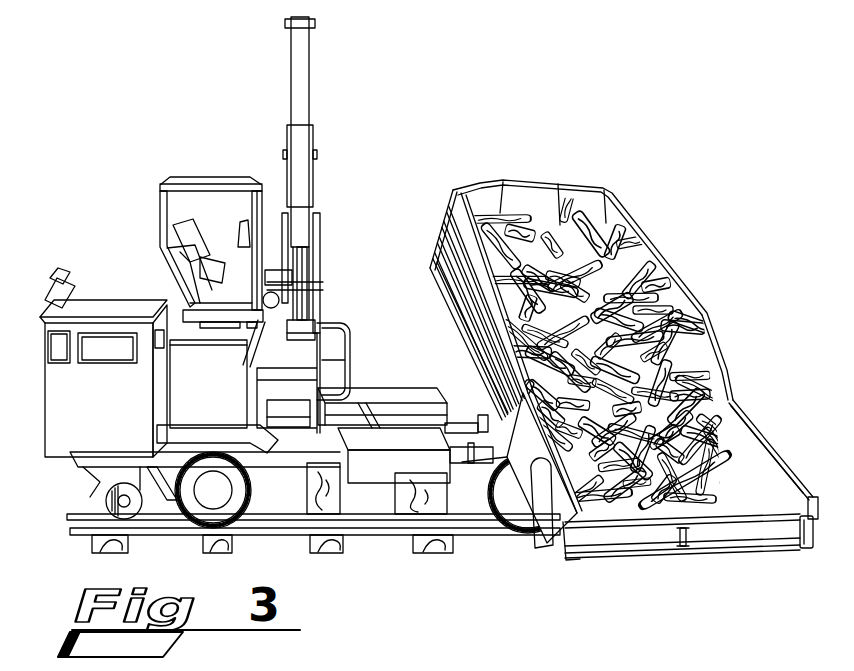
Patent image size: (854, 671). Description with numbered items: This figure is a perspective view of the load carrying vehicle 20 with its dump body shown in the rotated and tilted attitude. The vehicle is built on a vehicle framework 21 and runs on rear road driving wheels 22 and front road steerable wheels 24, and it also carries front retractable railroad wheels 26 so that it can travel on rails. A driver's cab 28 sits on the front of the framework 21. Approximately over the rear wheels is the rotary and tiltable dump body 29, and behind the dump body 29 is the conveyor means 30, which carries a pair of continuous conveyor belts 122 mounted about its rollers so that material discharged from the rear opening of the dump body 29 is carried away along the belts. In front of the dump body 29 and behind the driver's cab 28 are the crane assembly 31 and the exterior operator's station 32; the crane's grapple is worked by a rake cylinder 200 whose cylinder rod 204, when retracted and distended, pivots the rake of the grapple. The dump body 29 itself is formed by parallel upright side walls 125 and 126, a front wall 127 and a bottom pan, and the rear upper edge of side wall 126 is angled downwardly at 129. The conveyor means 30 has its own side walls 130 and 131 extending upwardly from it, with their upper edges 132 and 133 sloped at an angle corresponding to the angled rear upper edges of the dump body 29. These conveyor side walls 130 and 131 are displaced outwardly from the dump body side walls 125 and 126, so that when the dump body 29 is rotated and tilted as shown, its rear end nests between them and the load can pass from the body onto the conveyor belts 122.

The load carrying vehicle 20 is at (185, 165).
The vehicle framework 21 is at (473, 414).
The rear road driving wheels 22 is at (493, 462).
The front road steerable wheels 24 is at (233, 508).
The front retractable railroad wheels 26 is at (113, 500).
The driver's cab 28 is at (100, 300).
The rotary and tiltable dump body 29 is at (548, 178).
The conveyor means 30 is at (743, 490).
The crane assembly 31 is at (325, 230).
The exterior operator's station 32 is at (240, 176).
The continuous conveyor belts 122 is at (760, 507).
The side wall 125 is at (660, 272).
The side wall 126 is at (445, 222).
The front wall 127 is at (490, 193).
The angled rear upper edge 129 is at (523, 382).
The side wall 130 is at (743, 413).
The side wall 131 is at (527, 447).
The upper edge 132 is at (760, 453).
The upper edge 133 is at (547, 470).
The rake cylinder 200 is at (301, 190).
The cylinder rod 204 is at (300, 267).